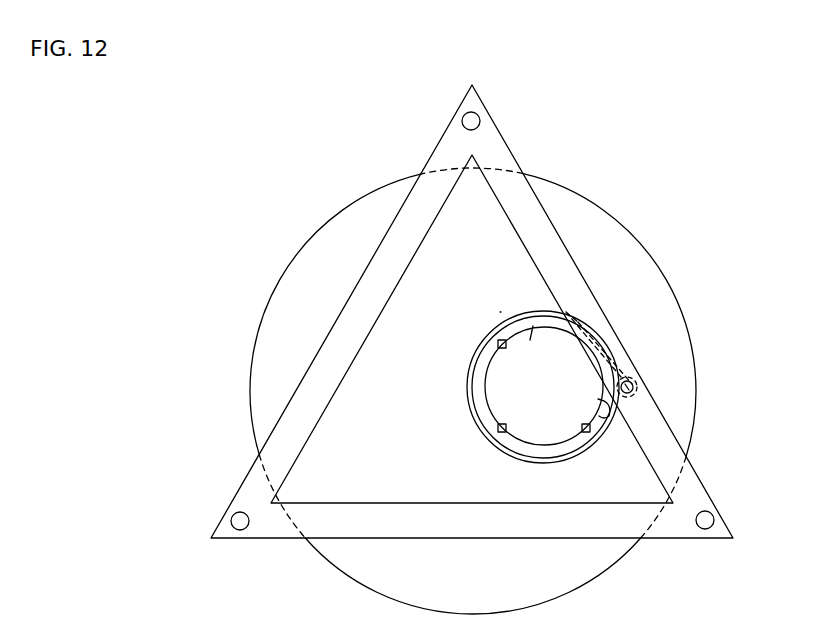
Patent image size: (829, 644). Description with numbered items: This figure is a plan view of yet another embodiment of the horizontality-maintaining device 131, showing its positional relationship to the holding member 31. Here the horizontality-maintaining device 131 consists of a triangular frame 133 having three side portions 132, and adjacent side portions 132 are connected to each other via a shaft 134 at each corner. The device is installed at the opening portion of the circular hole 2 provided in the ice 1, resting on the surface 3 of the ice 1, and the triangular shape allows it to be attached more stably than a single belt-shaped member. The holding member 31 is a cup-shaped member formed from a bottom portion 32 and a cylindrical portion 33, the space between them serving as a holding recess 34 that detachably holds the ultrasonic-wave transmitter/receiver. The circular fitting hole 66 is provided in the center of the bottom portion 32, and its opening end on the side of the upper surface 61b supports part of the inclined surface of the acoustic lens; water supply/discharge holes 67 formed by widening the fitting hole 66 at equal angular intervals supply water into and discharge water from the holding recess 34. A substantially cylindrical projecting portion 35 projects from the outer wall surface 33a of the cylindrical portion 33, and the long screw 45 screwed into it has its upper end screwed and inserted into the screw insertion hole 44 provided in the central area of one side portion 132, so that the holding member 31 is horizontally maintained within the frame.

The ice 1 is at (286, 232).
The circular hole 2 is at (248, 394).
The surface of the ice 3 is at (294, 266).
The holding member 31 is at (430, 387).
The bottom portion 32 is at (528, 349).
The cylindrical portion 33 is at (518, 314).
The outer wall surface 33a is at (497, 463).
The holding recess 34 is at (610, 419).
The projecting portion 35 is at (628, 354).
The screw insertion hole 44 is at (634, 388).
The long screw 45 is at (633, 381).
The upper surface 61b is at (541, 440).
The fitting hole 66 is at (565, 328).
The water supply/discharge hole 67 is at (497, 346).
The horizontality-maintaining device 131 is at (481, 349).
The side portion 132 is at (528, 202).
The triangular frame 133 is at (703, 478).
The shaft 134 is at (463, 119).